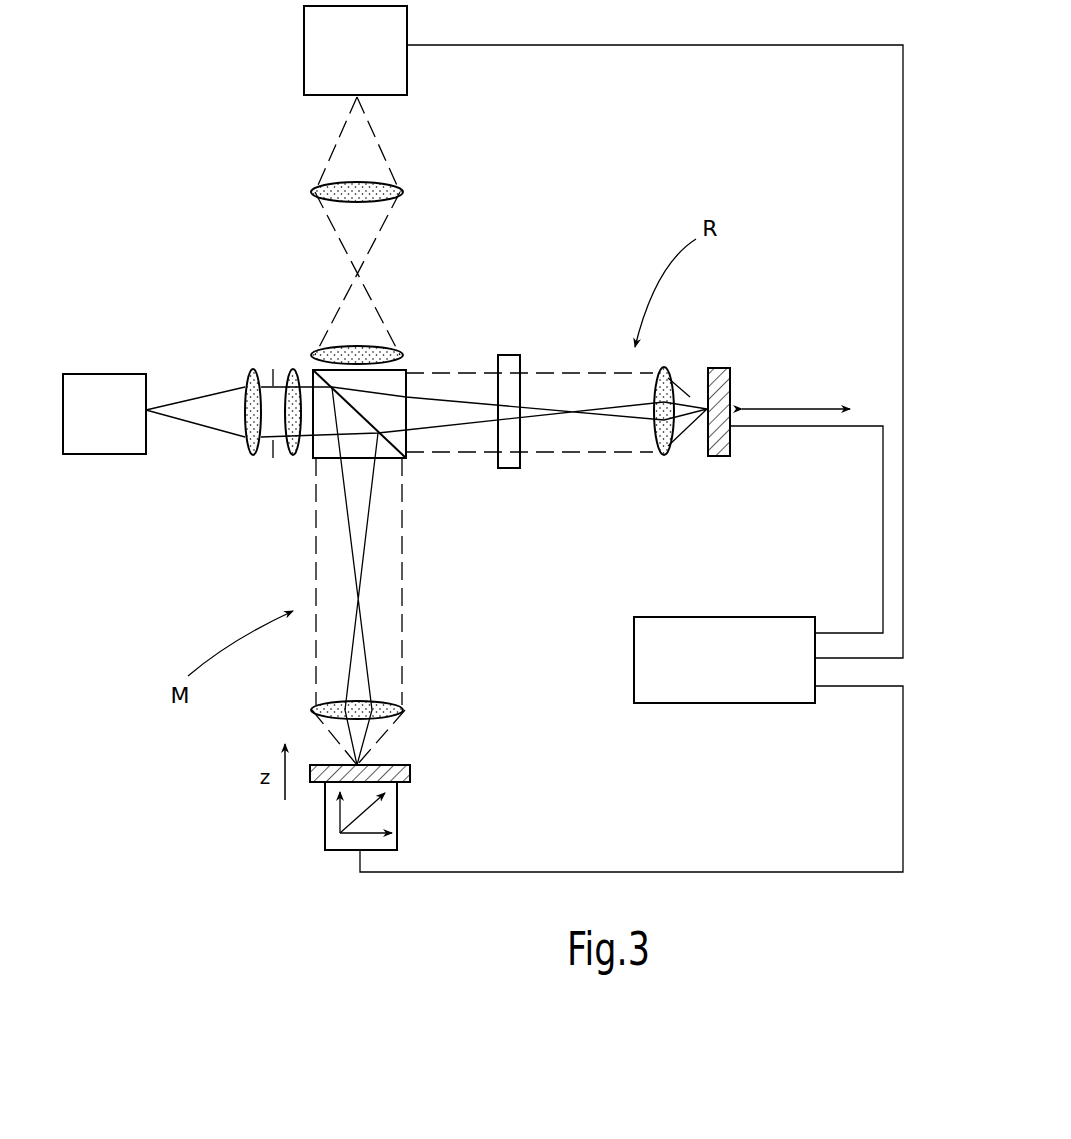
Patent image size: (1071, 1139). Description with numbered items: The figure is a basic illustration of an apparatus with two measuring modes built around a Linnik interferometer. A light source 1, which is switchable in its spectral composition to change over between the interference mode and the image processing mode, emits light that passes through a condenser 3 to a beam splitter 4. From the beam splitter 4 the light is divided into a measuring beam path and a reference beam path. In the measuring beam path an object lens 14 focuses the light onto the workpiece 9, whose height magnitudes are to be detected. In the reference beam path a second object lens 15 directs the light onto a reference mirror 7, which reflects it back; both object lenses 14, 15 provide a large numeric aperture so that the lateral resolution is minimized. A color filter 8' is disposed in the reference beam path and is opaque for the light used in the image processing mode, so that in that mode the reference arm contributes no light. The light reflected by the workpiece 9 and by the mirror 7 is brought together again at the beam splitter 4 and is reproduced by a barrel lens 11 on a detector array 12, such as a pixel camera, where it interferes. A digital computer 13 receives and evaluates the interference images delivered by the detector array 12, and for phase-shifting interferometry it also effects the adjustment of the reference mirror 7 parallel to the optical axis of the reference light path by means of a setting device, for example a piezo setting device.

The light source 1 is at (108, 378).
The condenser 3 is at (272, 340).
The beam splitter 4 is at (312, 457).
The reference mirror 7 is at (722, 363).
The color filter 8' is at (545, 374).
The workpiece 9 is at (410, 770).
The barrel lens 11 is at (405, 355).
The detector array 12 is at (338, 62).
The digital computer 13 is at (710, 676).
The object lens 14 is at (405, 703).
The object lens 15 is at (660, 456).